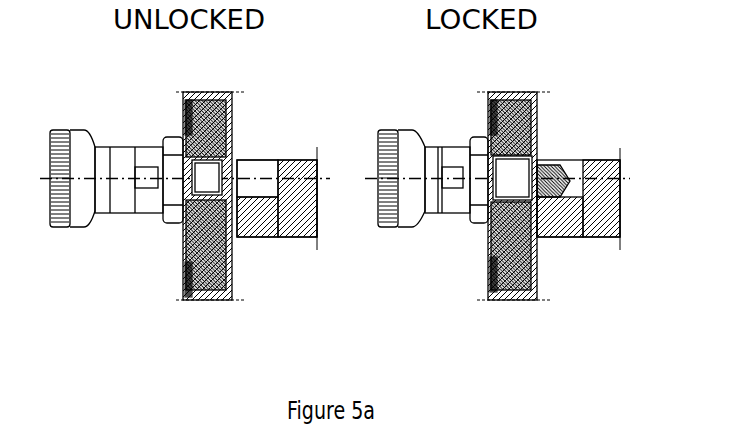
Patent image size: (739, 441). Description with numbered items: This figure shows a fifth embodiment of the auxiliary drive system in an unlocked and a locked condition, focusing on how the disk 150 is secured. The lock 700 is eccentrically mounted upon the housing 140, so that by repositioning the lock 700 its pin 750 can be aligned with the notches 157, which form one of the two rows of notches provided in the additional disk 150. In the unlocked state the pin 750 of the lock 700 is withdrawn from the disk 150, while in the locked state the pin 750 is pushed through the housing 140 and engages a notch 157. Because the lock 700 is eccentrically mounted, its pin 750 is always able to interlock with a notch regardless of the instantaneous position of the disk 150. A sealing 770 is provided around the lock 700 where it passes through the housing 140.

The lock 700 is at (80, 247).
The housing 140 is at (225, 288).
The disk 150 is at (408, 336).
The notches 157 is at (255, 173).
The pin 750 is at (550, 173).
The sealing 770 is at (491, 272).